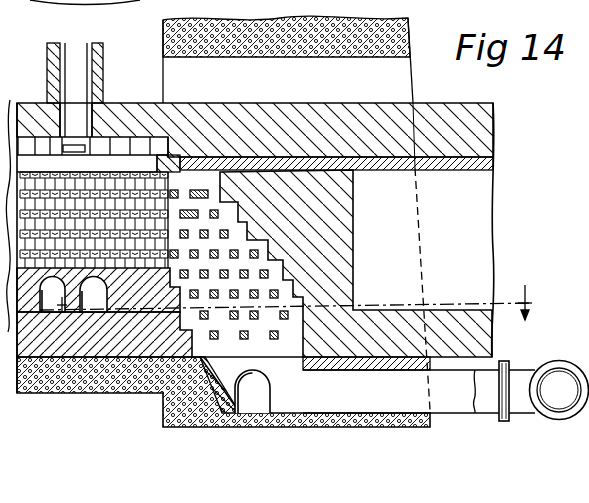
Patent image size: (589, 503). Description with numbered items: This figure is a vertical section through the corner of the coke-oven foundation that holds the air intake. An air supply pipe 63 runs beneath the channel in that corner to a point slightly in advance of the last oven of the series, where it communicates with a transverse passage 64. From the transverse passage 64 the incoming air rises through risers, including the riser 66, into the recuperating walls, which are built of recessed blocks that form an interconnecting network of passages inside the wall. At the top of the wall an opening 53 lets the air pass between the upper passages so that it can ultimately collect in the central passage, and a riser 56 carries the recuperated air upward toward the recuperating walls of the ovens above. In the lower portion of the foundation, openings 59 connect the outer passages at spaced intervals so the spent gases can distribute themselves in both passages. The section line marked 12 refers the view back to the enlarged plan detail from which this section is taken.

The section line 12- 12 is at (299, 302).
The opening 53 is at (78, 147).
The riser 56 is at (72, 58).
The opening 59 is at (99, 312).
The air supply pipe 63 is at (520, 377).
The transverse passage 64 is at (262, 393).
The riser 66 is at (240, 263).